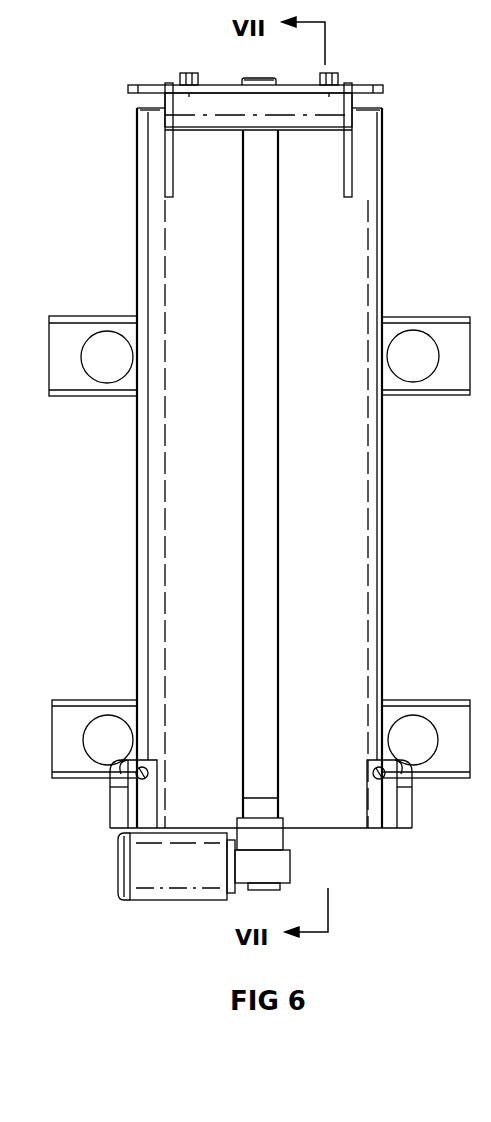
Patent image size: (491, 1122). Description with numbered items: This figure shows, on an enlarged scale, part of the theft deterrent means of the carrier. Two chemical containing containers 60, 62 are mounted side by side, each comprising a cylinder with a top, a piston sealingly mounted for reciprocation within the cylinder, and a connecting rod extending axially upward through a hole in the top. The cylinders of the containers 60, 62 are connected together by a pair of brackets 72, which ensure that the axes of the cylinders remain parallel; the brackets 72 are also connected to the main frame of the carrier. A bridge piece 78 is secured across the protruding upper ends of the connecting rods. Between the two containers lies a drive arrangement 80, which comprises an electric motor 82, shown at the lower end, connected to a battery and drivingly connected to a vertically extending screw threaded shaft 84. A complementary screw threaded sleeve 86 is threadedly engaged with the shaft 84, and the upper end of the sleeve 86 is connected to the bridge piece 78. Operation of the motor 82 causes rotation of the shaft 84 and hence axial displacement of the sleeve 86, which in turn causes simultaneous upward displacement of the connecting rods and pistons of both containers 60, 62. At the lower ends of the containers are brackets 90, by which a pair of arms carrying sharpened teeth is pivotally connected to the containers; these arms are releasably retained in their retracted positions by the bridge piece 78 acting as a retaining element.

The chemical containing container 60 is at (108, 183).
The chemical containing container 62 is at (408, 202).
The brackets 72 is at (443, 330).
The bridge piece 78 is at (222, 90).
The drive arrangement 80 is at (190, 494).
The electric motor 82 is at (165, 878).
The screw threaded shaft 84 is at (265, 833).
The screw threaded sleeve 86 is at (262, 603).
The brackets 90 is at (140, 806).